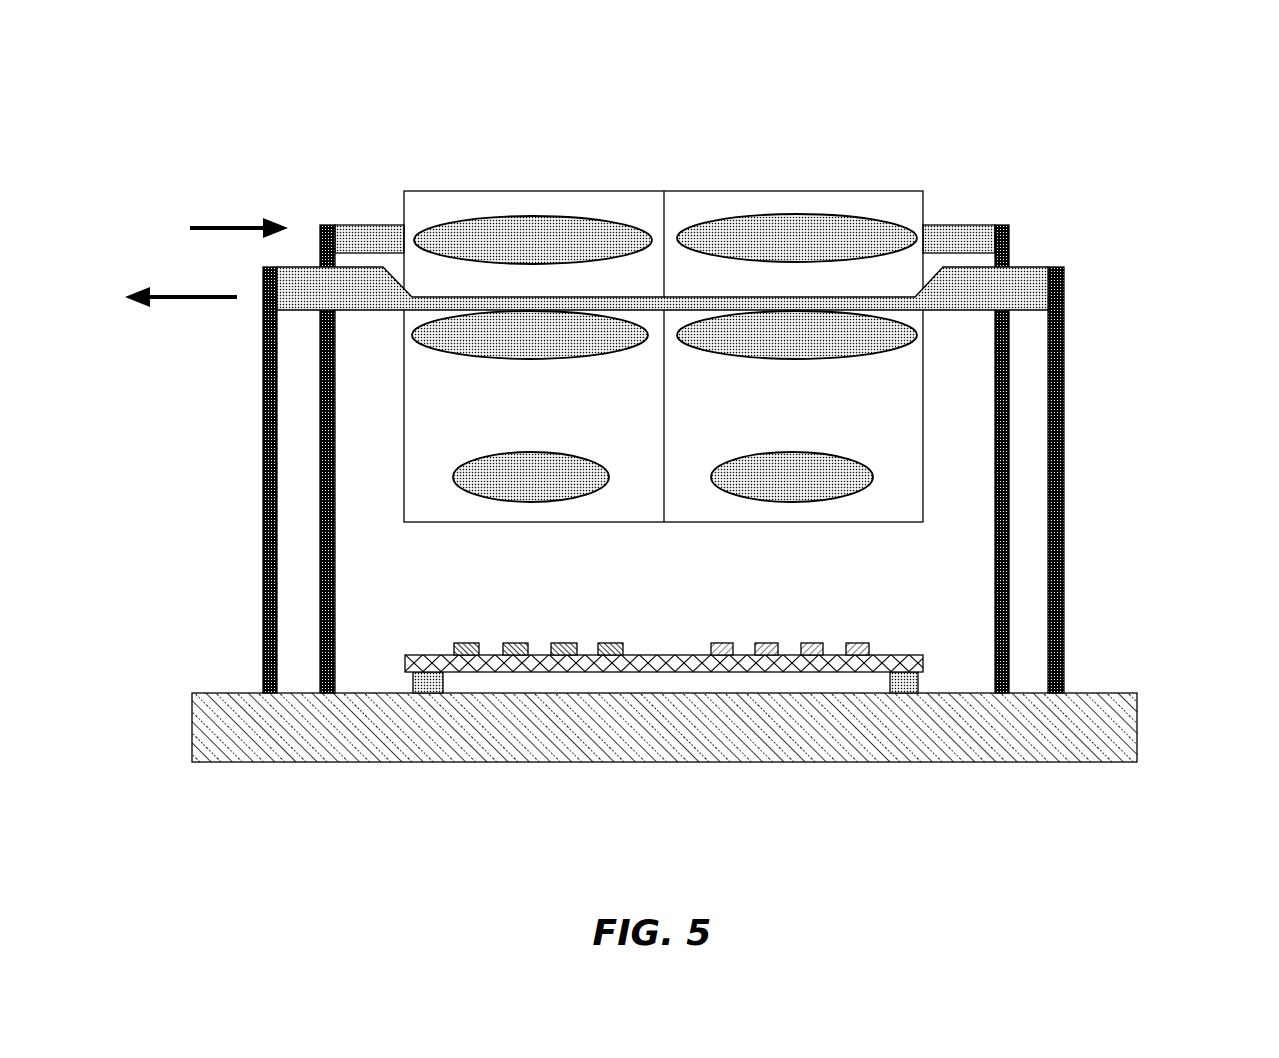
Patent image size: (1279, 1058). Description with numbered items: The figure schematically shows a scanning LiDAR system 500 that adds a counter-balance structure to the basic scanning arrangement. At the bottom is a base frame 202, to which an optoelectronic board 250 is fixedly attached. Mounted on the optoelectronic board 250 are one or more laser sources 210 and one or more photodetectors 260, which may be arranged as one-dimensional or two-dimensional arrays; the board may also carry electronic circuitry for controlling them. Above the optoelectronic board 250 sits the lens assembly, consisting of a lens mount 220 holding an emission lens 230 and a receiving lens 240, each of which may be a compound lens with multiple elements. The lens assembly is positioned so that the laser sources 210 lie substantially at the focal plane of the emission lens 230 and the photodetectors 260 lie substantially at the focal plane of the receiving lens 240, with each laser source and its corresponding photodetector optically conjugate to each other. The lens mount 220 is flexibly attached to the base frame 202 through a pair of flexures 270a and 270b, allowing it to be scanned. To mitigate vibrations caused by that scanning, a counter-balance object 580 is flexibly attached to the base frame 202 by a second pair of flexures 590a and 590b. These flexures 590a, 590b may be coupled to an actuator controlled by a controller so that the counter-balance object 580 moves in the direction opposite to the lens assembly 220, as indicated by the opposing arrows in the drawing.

The scanning LiDAR system 500 is at (233, 118).
The base frame 202 is at (1098, 718).
The laser sources 210 is at (725, 643).
The lens mount 220 is at (902, 195).
The emission lens 230 is at (797, 228).
The receiving lens 240 is at (533, 228).
The optoelectronic board 250 is at (923, 660).
The photodetectors 260 is at (465, 643).
The flexure 270a is at (1008, 423).
The flexure 270b is at (322, 460).
The counter-balance object 580 is at (1018, 280).
The flexure 590a is at (1065, 518).
The flexure 590b is at (263, 547).